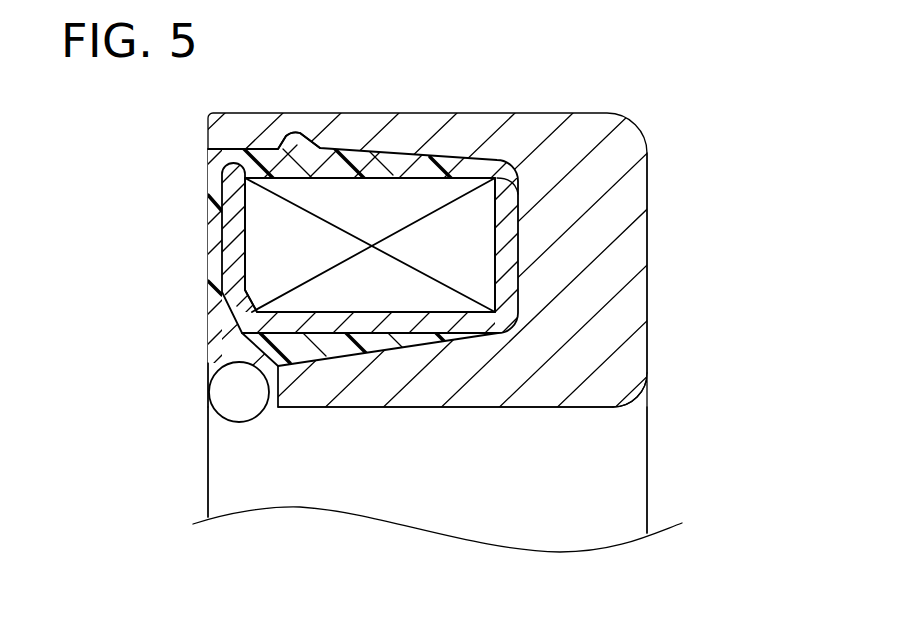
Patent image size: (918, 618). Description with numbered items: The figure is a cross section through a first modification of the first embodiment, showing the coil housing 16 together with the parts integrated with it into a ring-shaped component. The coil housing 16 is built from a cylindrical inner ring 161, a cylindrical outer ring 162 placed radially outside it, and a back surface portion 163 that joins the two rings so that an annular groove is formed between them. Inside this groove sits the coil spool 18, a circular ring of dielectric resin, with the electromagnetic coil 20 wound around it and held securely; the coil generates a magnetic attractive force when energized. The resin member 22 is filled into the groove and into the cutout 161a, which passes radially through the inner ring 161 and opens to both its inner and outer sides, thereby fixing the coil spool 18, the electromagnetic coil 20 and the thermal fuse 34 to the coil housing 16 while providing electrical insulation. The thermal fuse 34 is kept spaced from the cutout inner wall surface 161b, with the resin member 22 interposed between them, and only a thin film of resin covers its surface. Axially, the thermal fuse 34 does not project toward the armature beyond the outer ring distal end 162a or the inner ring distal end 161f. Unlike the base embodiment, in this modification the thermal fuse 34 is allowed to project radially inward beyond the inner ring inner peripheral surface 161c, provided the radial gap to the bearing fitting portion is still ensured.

The coil housing 16 is at (587, 113).
The coil spool 18 is at (232, 245).
The electromagnetic coil 20 is at (265, 200).
The resin member 22 is at (342, 148).
The thermal fuse 34 is at (233, 387).
The inner ring 161 is at (432, 400).
The cutout 161a is at (270, 367).
The cutout inner wall surface 161b is at (270, 389).
The inner ring inner peripheral surface 161c is at (572, 418).
The inner ring distal end 161f is at (208, 402).
The outer ring 162 is at (466, 128).
The outer ring distal end 162a is at (207, 136).
The back surface portion 163 is at (627, 254).